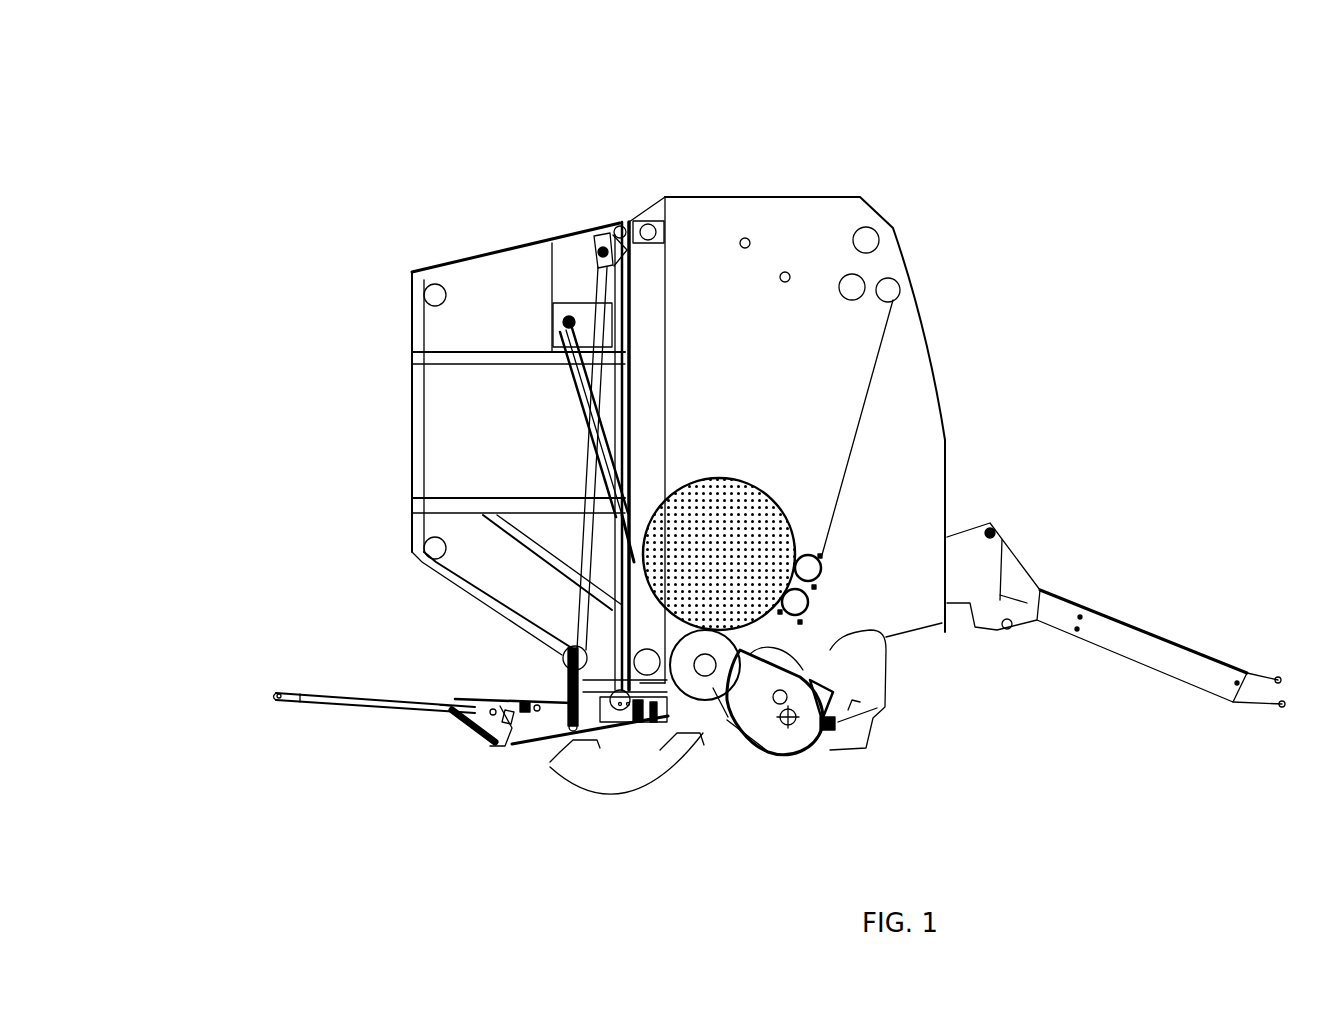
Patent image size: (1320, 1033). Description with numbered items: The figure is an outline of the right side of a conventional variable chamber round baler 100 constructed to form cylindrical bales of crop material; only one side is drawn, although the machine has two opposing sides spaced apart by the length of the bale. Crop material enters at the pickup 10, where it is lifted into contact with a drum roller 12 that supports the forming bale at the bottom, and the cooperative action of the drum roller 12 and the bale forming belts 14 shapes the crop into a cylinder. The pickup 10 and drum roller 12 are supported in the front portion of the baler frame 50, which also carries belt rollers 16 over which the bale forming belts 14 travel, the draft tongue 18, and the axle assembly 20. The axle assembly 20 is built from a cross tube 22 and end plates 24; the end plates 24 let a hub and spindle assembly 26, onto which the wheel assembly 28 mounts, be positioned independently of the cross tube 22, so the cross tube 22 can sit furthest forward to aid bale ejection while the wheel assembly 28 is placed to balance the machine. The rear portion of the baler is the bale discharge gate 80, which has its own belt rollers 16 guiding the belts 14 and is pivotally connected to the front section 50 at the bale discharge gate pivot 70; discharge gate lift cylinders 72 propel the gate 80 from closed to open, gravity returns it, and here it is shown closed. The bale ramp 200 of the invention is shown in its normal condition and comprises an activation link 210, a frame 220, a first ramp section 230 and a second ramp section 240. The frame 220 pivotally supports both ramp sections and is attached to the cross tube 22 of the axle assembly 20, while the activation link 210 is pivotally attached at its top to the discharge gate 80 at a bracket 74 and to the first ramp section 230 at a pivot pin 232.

The round baler 100 is at (815, 103).
The front portion of the baler frame 50 is at (790, 194).
The belt rollers 16 is at (437, 292).
The bale forming belts 14 is at (426, 386).
The bale discharge gate 80 is at (545, 241).
The discharge gate lift cylinders 72 is at (576, 386).
The bale discharge gate pivot 70 is at (620, 236).
The bracket 74 is at (585, 243).
The activation link 210 is at (590, 485).
The draft tongue 18 is at (1037, 575).
The pickup 10 is at (920, 728).
The drum roller 12 is at (750, 740).
The cross tube 22 is at (664, 768).
The axle assembly 20 is at (577, 772).
The end plates 24 is at (620, 700).
The hub and spindle assembly 26 is at (628, 700).
The wheel assembly 28 is at (664, 772).
The bale ramp 200 is at (330, 778).
The frame 220 is at (525, 739).
The first ramp section 230 is at (550, 706).
The pivot pin 232 is at (548, 698).
The second ramp section 240 is at (300, 700).